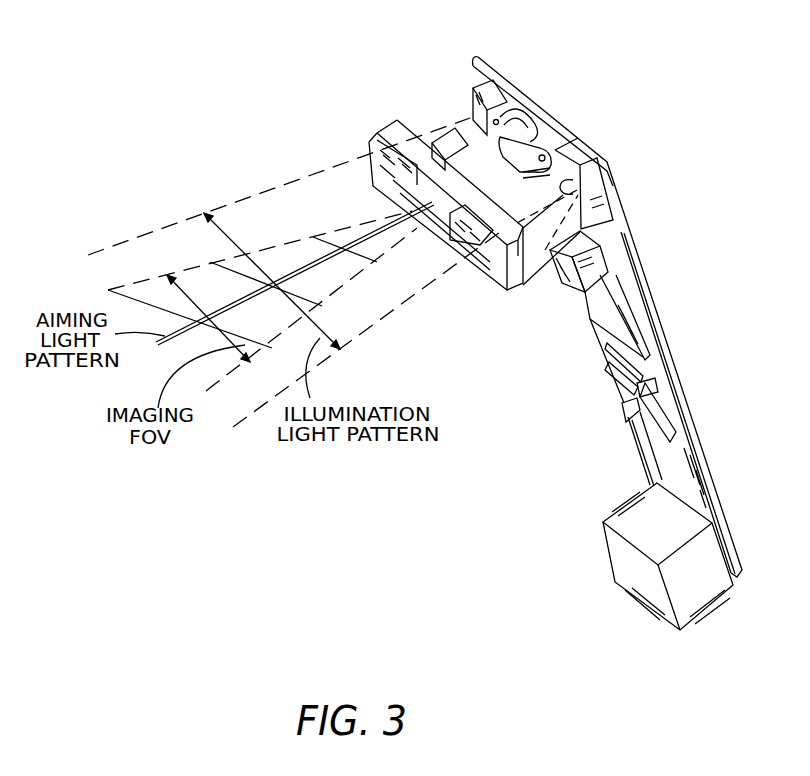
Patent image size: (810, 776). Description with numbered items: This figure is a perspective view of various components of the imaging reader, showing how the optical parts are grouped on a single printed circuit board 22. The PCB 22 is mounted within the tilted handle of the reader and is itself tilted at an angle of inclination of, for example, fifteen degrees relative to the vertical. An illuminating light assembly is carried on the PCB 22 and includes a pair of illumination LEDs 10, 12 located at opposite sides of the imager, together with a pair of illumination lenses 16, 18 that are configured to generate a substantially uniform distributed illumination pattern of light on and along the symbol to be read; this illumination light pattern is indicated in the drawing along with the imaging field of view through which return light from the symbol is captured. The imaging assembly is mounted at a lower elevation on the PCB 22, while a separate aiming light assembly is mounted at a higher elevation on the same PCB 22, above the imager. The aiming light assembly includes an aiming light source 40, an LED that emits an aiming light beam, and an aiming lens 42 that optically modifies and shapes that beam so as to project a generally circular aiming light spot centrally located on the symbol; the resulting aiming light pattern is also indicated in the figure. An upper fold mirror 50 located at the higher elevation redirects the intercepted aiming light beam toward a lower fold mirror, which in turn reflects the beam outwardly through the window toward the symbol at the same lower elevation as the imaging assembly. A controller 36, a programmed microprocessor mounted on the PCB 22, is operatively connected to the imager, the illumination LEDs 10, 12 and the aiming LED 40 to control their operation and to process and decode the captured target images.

The illumination LED 10 is at (472, 107).
The illumination LED 12 is at (566, 163).
The illumination lens 16 is at (421, 191).
The illumination lens 18 is at (498, 258).
The printed circuit board 22 is at (482, 58).
The controller 36 is at (596, 268).
The aiming light source 40 is at (527, 118).
The aiming lens 42 is at (500, 114).
The upper fold mirror 50 is at (439, 130).